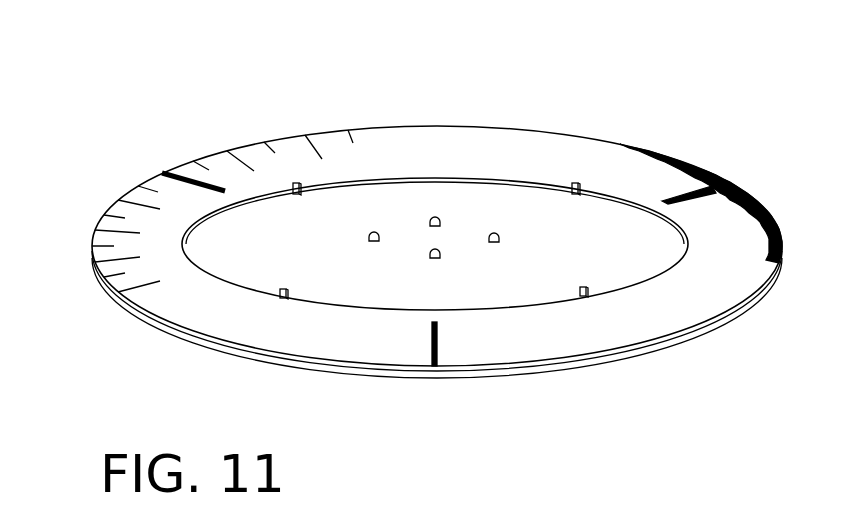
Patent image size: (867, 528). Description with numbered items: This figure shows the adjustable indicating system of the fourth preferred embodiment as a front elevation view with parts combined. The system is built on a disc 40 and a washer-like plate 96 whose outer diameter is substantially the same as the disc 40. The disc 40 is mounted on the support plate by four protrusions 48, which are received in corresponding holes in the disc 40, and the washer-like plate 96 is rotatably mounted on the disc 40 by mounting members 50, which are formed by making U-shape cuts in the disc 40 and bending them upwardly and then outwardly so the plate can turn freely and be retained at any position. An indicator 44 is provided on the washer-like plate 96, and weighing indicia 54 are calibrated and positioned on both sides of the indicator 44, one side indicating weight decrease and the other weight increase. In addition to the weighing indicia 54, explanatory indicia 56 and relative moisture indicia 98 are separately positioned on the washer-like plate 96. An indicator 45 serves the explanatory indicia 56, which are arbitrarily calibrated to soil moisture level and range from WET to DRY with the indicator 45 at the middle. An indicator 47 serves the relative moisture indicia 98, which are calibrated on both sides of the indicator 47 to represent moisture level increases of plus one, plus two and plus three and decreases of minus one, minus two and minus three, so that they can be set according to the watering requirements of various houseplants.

The disc 40 is at (183, 343).
The indicator 44 is at (177, 177).
The indicator 45 is at (688, 200).
The indicator 47 is at (440, 347).
The protrusions 48 is at (368, 236).
The mounting members 50 is at (298, 180).
The weighing indicia 54 is at (143, 183).
The explanatory indicia 56 is at (713, 170).
The washer-like plate 96 is at (483, 147).
The relative moisture indicia 98 is at (358, 356).